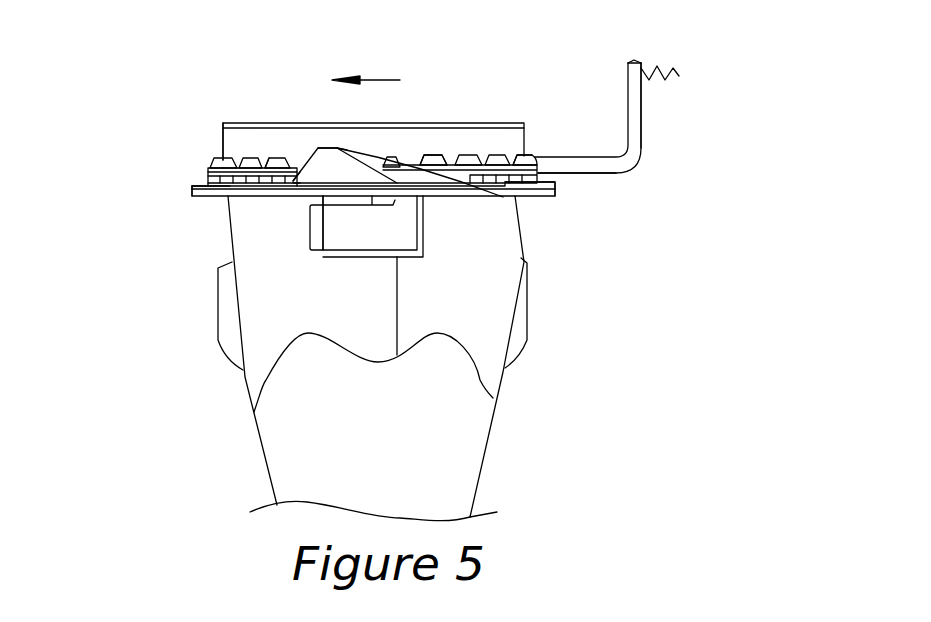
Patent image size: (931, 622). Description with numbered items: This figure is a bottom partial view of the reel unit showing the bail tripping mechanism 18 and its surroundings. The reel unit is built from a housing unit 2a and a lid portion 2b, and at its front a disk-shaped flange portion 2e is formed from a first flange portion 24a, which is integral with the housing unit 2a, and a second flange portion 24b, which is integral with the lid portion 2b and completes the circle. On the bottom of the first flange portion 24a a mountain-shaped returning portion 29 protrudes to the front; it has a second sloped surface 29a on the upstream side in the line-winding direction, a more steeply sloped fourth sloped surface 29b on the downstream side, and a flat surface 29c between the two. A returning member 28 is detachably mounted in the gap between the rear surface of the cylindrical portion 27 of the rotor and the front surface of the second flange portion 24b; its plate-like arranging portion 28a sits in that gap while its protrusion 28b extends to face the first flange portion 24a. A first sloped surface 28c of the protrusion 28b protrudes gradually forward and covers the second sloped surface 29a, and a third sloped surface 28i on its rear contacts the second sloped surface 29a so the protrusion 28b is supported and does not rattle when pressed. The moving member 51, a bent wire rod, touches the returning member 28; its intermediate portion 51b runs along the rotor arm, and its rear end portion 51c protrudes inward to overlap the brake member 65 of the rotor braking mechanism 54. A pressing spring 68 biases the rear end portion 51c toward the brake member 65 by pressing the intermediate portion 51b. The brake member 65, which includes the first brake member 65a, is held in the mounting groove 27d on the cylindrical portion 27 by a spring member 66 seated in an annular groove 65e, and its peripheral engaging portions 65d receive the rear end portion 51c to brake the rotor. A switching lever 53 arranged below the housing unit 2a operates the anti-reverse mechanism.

The housing unit 2a is at (238, 368).
The lid portion 2b is at (508, 370).
The flange portion 2e is at (277, 153).
The bail tripping mechanism 18 is at (578, 105).
The first flange portion 24a is at (192, 193).
The second flange portion 24b is at (548, 185).
The cylindrical portion 27 is at (487, 115).
The mounting groove 27d is at (213, 147).
The returning member 28 is at (501, 195).
The arranging portion 28a is at (533, 157).
The protrusion 28b is at (445, 155).
The first sloped surface 28c is at (422, 150).
The third sloped surface 28i is at (350, 192).
The returning portion 29 is at (325, 141).
The second sloped surface 29a is at (348, 195).
The fourth sloped surface 29b is at (282, 172).
The flat surface 29c is at (290, 168).
The moving member 51 is at (657, 161).
The intermediate portion 51b is at (645, 117).
The rear end portion 51c is at (651, 163).
The switching lever 53 is at (373, 223).
The rotor braking mechanism 54 is at (155, 178).
The brake member 65 is at (171, 142).
The first brake member 65a is at (206, 161).
The engaging portions 65d is at (535, 177).
The annular groove 65e is at (518, 158).
The spring member 66 is at (258, 193).
The pressing spring 68 is at (678, 72).